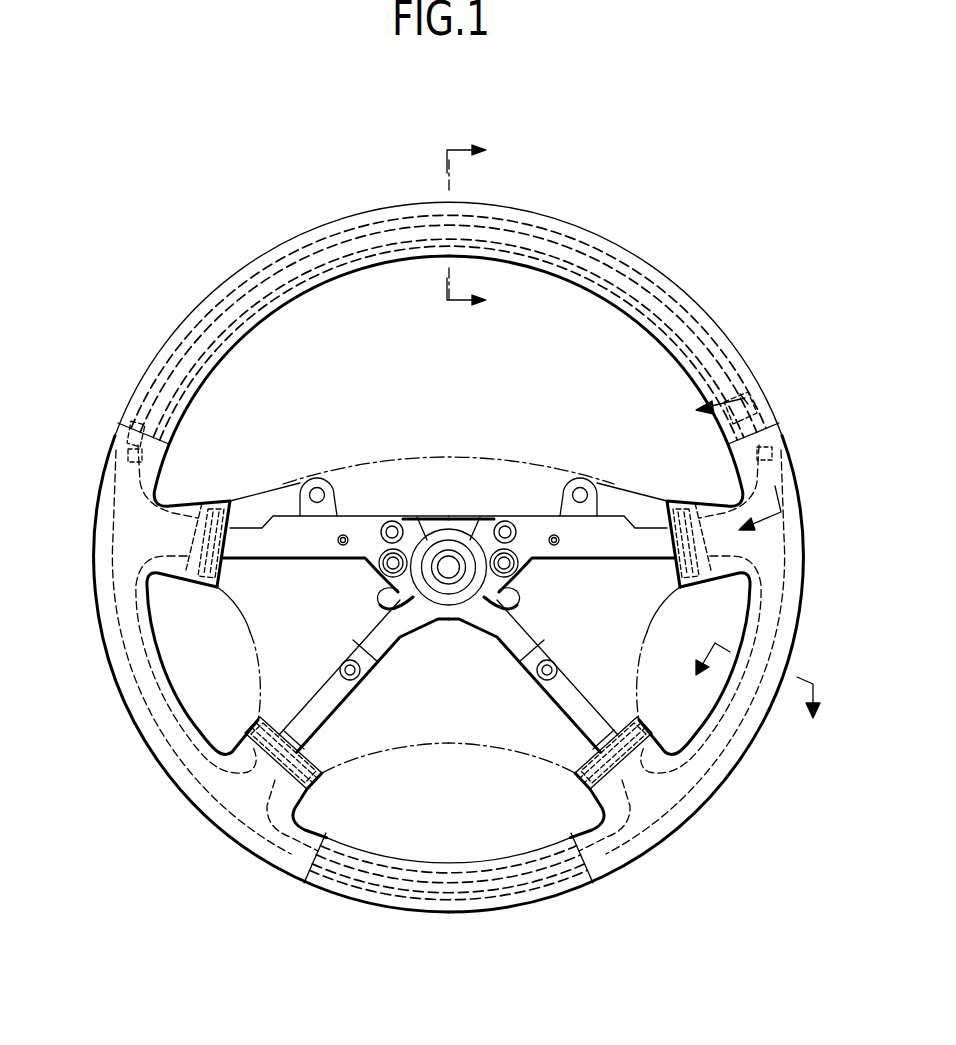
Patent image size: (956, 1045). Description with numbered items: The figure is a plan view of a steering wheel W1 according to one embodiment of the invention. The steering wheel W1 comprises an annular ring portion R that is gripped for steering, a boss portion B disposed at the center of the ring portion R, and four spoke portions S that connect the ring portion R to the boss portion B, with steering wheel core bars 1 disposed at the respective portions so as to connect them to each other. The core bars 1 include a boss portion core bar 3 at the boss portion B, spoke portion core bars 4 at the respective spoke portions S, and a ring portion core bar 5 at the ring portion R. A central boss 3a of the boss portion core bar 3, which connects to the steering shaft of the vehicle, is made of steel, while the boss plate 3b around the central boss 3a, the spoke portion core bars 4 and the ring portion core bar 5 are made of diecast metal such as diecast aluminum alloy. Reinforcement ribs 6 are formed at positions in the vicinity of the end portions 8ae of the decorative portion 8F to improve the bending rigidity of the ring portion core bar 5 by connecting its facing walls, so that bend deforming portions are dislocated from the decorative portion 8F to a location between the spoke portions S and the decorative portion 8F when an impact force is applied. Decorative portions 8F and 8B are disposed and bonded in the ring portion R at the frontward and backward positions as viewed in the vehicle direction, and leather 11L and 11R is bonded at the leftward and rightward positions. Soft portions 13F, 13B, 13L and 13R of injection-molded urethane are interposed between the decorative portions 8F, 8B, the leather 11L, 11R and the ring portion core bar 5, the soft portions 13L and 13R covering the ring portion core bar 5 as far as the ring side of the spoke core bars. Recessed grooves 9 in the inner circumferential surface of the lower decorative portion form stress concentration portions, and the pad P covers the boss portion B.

The steering wheel W1 is at (610, 932).
The steering wheel core bar 1 is at (463, 694).
The boss portion core bar 3 is at (494, 668).
The central boss 3a is at (440, 587).
The boss plate 3b is at (460, 612).
The spoke portion core bar 4 is at (288, 546).
The ring portion core bar 5 is at (310, 831).
The reinforcement rib 6 is at (772, 455).
The front decorative portion 8F is at (672, 277).
The rear decorative portion 8B is at (490, 908).
The end portion of decorative portion 8ae is at (770, 412).
The recessed groove 9 is at (252, 270).
The left leather 11L is at (200, 805).
The right leather 11R is at (660, 835).
The front soft portion 13F is at (561, 228).
The rear soft portion 13B is at (410, 907).
The left soft portion 13L is at (150, 742).
The right soft portion 13R is at (712, 780).
The boss portion B is at (497, 452).
The pad P is at (273, 485).
The ring portion R is at (714, 320).
The spoke portion S is at (176, 584).